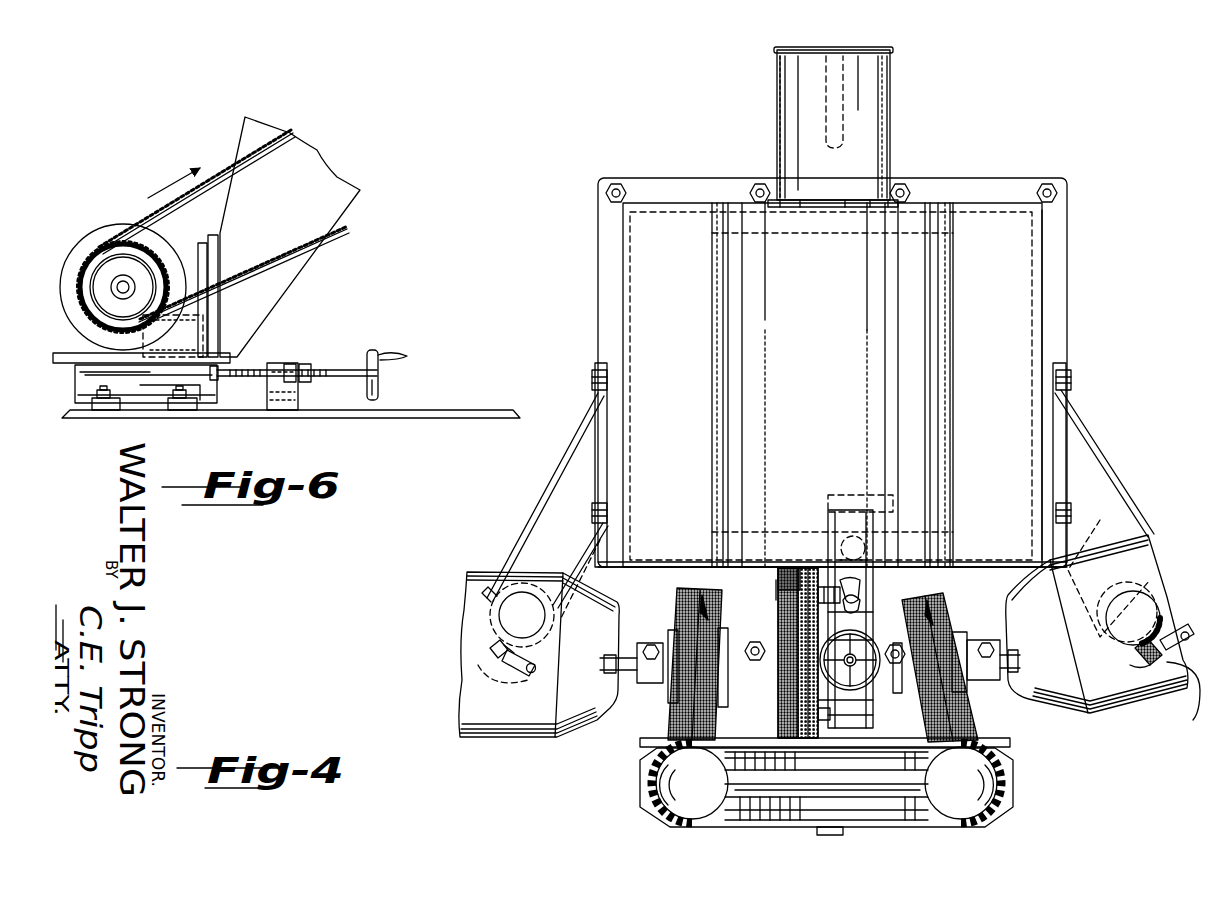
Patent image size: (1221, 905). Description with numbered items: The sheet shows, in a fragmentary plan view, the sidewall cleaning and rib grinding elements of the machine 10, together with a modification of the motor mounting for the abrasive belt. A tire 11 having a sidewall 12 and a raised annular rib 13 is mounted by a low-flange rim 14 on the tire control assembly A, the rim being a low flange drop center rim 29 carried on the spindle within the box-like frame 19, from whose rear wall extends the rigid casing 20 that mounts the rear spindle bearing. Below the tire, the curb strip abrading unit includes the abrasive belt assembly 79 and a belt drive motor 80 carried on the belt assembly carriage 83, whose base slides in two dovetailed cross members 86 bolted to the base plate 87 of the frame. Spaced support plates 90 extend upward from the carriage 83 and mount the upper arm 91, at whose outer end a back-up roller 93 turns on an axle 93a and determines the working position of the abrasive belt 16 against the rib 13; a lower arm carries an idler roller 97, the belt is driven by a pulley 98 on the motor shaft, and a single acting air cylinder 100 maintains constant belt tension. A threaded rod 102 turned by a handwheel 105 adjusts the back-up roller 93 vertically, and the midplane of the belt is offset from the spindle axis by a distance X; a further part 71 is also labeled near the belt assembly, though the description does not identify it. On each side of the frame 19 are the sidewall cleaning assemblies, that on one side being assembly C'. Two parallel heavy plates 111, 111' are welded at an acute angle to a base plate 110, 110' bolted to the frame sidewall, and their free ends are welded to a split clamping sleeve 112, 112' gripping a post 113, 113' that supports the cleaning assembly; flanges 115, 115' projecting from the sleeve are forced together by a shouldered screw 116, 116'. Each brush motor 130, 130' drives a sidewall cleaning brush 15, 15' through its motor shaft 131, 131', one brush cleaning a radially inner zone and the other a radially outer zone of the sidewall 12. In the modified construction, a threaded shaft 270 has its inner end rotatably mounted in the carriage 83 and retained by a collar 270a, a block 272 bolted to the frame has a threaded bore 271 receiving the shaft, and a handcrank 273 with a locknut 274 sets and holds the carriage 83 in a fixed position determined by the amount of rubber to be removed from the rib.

In FIG. 4, the machine 10 is at (1077, 248).
In FIG. 4, the tire 11 is at (1020, 773).
In FIG. 4, the sidewall 12 is at (683, 823).
In FIG. 4, the raised annular rib 13 is at (980, 745).
In FIG. 4, the low-flange rim 14 is at (880, 733).
In FIG. 4, the sidewall cleaning brush 15 is at (943, 667).
In FIG. 4, the sidewall cleaning brush 15' is at (680, 664).
In FIG. 6, the abrasive belt 16 is at (150, 215).
In FIG. 4, the abrasive belt 16 is at (785, 628).
In FIG. 4, the frame 19 is at (1042, 222).
In FIG. 4, the casing 20 is at (905, 113).
In FIG. 4, the drop center rim 29 is at (880, 806).
In FIG. 4, the bracket 71 is at (818, 594).
In FIG. 4, the abrasive belt assembly 79 is at (775, 577).
In FIG. 6, the belt drive motor 80 is at (98, 237).
In FIG. 6, the belt assembly carriage 83 is at (138, 395).
In FIG. 6, the cross members 86 is at (107, 410).
In FIG. 6, the base plate 87 is at (360, 417).
In FIG. 4, the base plate 87 is at (1052, 277).
In FIG. 6, the support plates 90 is at (247, 130).
In FIG. 4, the support plates 90 is at (828, 512).
In FIG. 4, the upper arm 91 is at (862, 612).
In FIG. 4, the back-up roller 93 is at (776, 712).
In FIG. 4, the axle 93a is at (833, 717).
In FIG. 4, the idler roller 97 is at (776, 680).
In FIG. 6, the pulley 98 is at (97, 258).
In FIG. 4, the single acting air cylinder 100 is at (841, 546).
In FIG. 4, the threaded rod 102 is at (858, 692).
In FIG. 4, the handwheel 105 is at (866, 680).
In FIG. 4, the base plate 110 is at (1101, 463).
In FIG. 4, the base plate 110' is at (545, 497).
In FIG. 4, the parallel heavy plates 111 is at (1115, 560).
In FIG. 4, the parallel heavy plates 111' is at (538, 568).
In FIG. 4, the split clamping sleeve 112 is at (1152, 598).
In FIG. 4, the split clamping sleeve 112' is at (475, 615).
In FIG. 4, the post 113 is at (1162, 618).
In FIG. 4, the post 113' is at (479, 611).
In FIG. 4, the flanges 115 is at (1164, 681).
In FIG. 4, the flanges 115' is at (466, 657).
In FIG. 4, the shouldered screw 116 is at (1181, 683).
In FIG. 4, the shouldered screw 116' is at (474, 671).
In FIG. 4, the brush motor 130 is at (1097, 651).
In FIG. 4, the brush motor 130' is at (539, 665).
In FIG. 4, the motor shaft 131 is at (995, 672).
In FIG. 4, the motor shaft 131' is at (639, 674).
In FIG. 6, the threaded shaft 270 is at (350, 368).
In FIG. 6, the collar 270a is at (215, 395).
In FIG. 6, the threaded bore 271 is at (290, 366).
In FIG. 6, the block 272 is at (298, 393).
In FIG. 6, the handcrank 273 is at (373, 383).
In FIG. 6, the locknut 274 is at (303, 367).
In FIG. 4, the offset distance X is at (805, 686).
In FIG. 4, the tire control assembly A is at (1000, 823).
In FIG. 4, the sidewall cleaning assembly C' is at (507, 762).